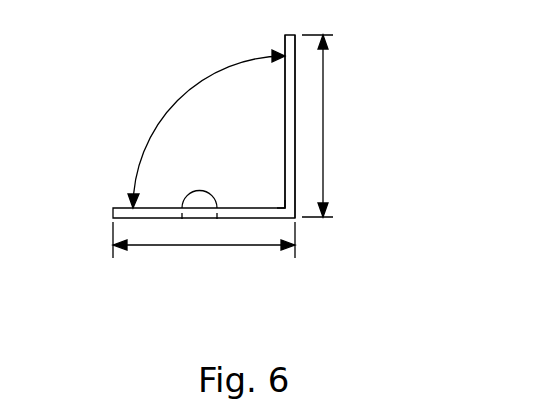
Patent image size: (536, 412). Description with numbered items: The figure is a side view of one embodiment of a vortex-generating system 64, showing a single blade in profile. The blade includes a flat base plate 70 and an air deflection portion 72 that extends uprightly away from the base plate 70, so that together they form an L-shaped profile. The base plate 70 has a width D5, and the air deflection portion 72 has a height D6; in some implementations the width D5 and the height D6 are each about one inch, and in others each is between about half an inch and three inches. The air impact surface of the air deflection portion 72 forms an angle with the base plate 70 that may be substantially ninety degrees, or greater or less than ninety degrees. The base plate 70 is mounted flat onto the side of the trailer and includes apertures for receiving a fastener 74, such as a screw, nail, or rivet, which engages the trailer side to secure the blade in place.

The vortex-generating system 64 is at (284, 118).
The base plate 70 is at (117, 206).
The air deflection portion 72 is at (285, 182).
The fastener 74 is at (182, 206).
The width of the base plate D5 is at (173, 250).
The height of the air deflection portion D6 is at (323, 120).